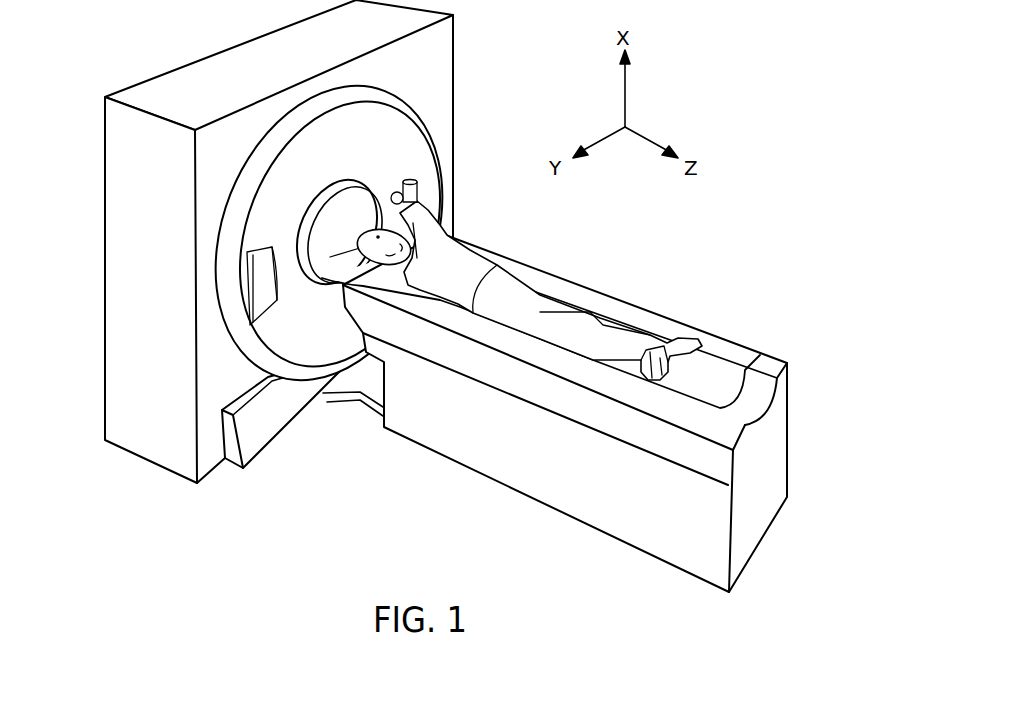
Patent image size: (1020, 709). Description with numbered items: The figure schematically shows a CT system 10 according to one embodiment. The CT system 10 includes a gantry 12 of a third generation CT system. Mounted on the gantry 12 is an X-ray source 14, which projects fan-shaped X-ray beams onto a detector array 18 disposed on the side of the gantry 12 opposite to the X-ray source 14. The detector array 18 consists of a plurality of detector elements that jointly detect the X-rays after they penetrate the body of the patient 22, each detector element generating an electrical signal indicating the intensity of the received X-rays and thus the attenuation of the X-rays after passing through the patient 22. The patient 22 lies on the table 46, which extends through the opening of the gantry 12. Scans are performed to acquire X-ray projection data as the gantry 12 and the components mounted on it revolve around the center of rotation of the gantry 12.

The CT system 10 is at (352, 418).
The gantry 12 is at (130, 136).
The X-ray source 14 is at (418, 193).
The detector array 18 is at (258, 297).
The patient 22 is at (458, 258).
The table 46 is at (535, 483).